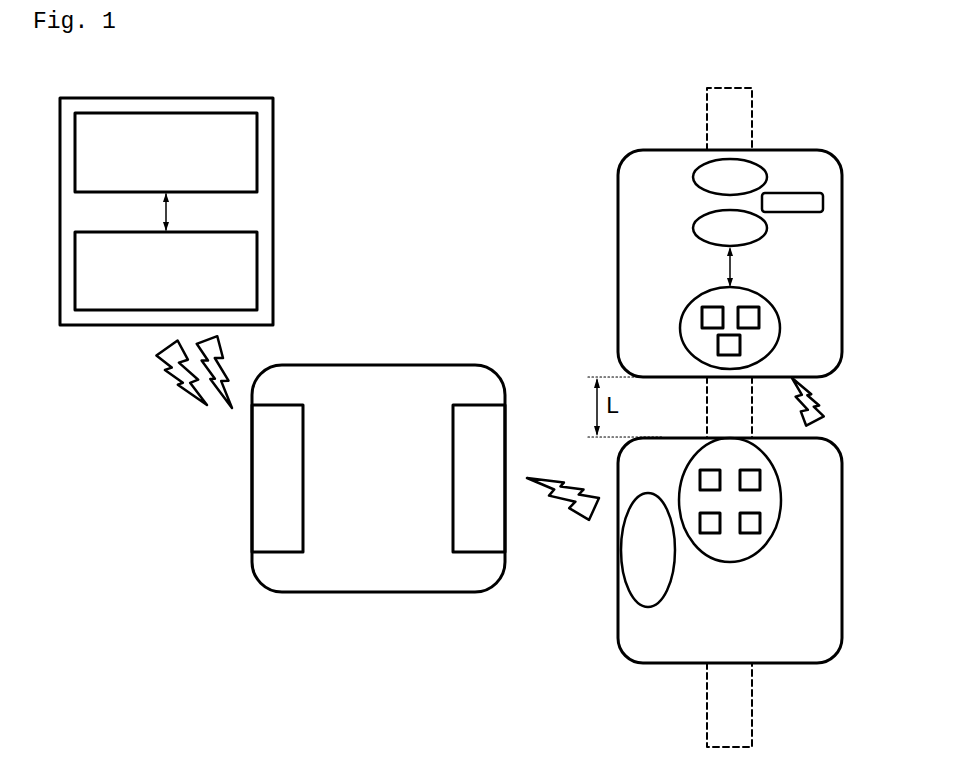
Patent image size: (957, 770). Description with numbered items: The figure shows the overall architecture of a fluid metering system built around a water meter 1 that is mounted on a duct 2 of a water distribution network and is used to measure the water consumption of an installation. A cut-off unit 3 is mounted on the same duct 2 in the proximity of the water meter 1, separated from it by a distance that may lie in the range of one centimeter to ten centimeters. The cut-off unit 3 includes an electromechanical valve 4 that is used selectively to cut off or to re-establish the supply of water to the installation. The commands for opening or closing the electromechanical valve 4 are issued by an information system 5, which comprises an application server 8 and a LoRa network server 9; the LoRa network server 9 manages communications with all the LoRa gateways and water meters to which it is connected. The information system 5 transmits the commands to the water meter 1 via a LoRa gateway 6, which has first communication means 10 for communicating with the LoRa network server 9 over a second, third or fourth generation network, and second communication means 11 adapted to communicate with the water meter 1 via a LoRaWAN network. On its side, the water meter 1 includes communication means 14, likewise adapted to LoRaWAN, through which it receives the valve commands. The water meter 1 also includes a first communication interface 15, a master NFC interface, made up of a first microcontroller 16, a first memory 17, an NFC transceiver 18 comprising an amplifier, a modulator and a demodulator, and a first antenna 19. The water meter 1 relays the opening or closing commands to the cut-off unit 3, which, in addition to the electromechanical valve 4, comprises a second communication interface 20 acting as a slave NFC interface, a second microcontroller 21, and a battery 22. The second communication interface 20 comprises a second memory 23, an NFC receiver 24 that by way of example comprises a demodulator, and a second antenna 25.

The water meter 1 is at (832, 575).
The duct 2 is at (740, 707).
The cut-off unit 3 is at (632, 254).
The electromechanical valve 4 is at (730, 177).
The information system 5 is at (273, 198).
The LoRa gateway 6 is at (352, 593).
The application server 8 is at (166, 152).
The LoRa network server 9 is at (166, 271).
The first communication means 10 is at (258, 494).
The second communication means 11 is at (465, 433).
The communication means 14 is at (637, 591).
The first communication interface 15 is at (770, 500).
The first microcontroller 16 is at (706, 534).
The first memory 17 is at (760, 525).
The NFC transceiver 18 is at (700, 480).
The first antenna 19 is at (760, 480).
The second communication interface 20 is at (688, 334).
The second microcontroller 21 is at (730, 228).
The battery 22 is at (793, 195).
The second memory 23 is at (702, 314).
The NFC receiver 24 is at (759, 314).
The second antenna 25 is at (742, 343).